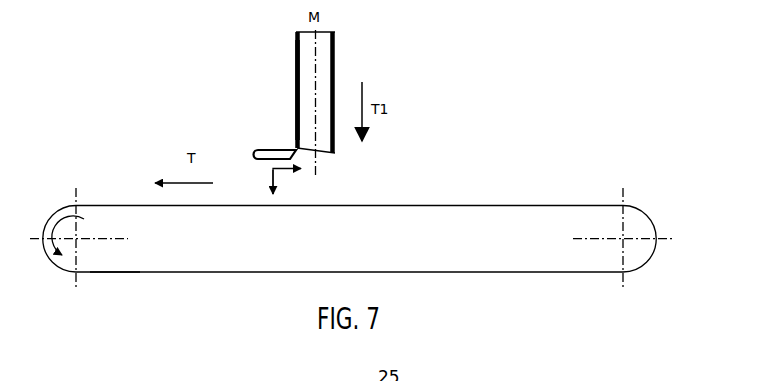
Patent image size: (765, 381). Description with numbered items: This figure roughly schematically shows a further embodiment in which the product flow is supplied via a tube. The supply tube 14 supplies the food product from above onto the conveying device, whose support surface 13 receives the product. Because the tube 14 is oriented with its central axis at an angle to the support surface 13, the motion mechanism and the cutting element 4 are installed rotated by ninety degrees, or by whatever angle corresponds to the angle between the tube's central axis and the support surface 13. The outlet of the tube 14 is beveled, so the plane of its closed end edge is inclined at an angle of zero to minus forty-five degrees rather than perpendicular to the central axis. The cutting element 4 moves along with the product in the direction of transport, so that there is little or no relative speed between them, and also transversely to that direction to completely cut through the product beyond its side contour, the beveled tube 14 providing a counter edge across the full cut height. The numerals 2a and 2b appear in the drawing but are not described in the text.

The support surface 13 is at (134, 204).
The lower run of belt 2b is at (114, 274).
The nozzle wall 2a is at (295, 46).
The supply tube 14 is at (336, 45).
The cutting element 4 is at (258, 150).